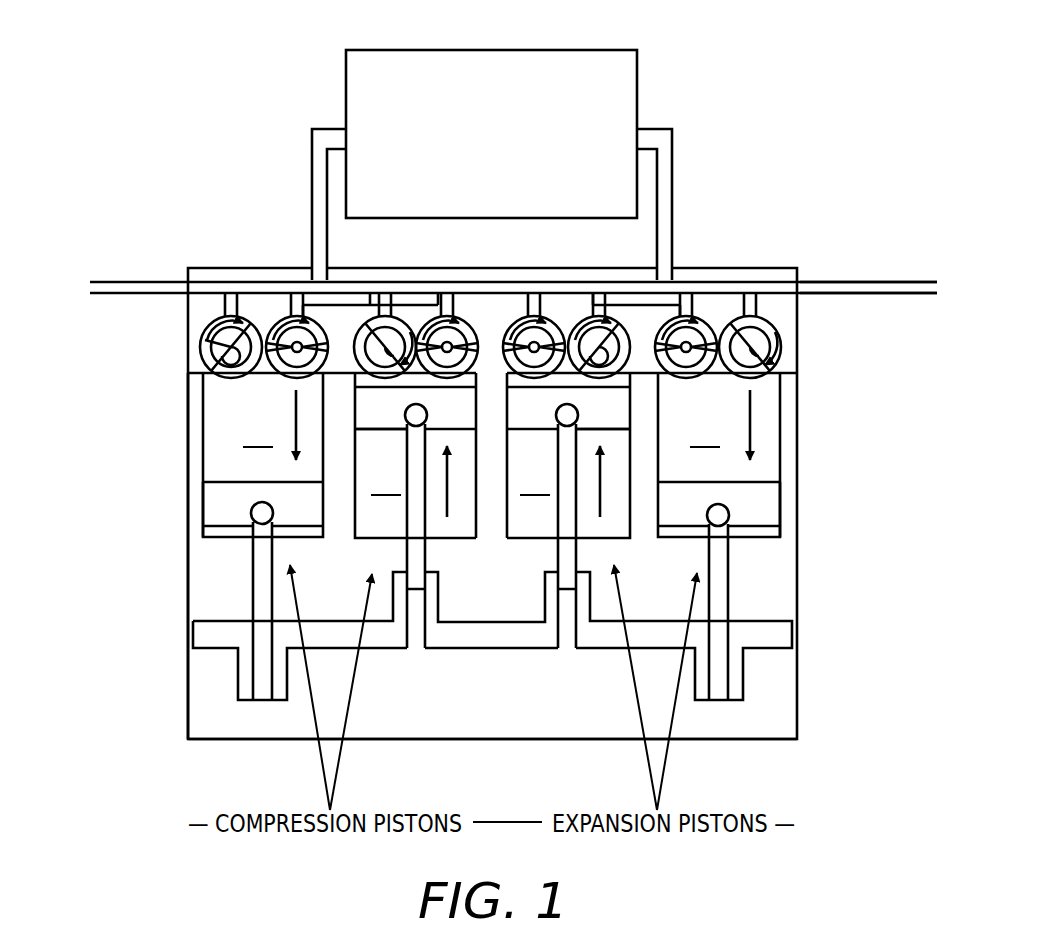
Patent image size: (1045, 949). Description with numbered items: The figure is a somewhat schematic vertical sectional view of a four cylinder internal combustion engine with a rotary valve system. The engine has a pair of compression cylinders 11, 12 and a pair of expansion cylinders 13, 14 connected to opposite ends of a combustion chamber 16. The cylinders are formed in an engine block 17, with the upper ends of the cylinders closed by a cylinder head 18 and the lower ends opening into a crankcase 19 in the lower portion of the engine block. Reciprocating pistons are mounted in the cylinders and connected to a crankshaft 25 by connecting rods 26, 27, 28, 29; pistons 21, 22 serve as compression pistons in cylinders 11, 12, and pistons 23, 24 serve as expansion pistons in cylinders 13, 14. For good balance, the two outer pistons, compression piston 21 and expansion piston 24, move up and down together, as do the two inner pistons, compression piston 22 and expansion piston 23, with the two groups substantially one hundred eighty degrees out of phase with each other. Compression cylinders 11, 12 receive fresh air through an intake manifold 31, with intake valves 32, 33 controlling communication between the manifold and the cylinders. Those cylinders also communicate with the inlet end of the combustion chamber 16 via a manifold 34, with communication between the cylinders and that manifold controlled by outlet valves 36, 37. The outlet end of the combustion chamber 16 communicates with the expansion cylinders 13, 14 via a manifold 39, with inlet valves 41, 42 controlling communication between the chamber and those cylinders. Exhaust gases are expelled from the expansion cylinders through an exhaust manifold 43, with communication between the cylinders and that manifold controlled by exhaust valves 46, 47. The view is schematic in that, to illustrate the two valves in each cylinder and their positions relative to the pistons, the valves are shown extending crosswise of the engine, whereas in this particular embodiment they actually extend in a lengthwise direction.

The compression cylinder 11 is at (263, 455).
The compression cylinder 12 is at (415, 455).
The expansion cylinder 13 is at (568, 455).
The expansion cylinder 14 is at (719, 455).
The combustion chamber 16 is at (362, 69).
The engine block 17 is at (190, 483).
The cylinder head 18 is at (538, 278).
The crankcase 19 is at (486, 722).
The compression piston 21 is at (210, 513).
The compression piston 22 is at (372, 411).
The expansion piston 23 is at (613, 412).
The expansion piston 24 is at (773, 513).
The crankshaft 25 is at (490, 648).
The connecting rod 26 is at (260, 585).
The connecting rod 27 is at (420, 552).
The connecting rod 28 is at (563, 520).
The connecting rod 29 is at (730, 587).
The intake manifold 31 is at (178, 282).
The intake valve 32 is at (205, 345).
The intake valve 33 is at (372, 334).
The manifold 34 is at (418, 297).
The outlet valve 36 is at (296, 317).
The outlet valve 37 is at (458, 330).
The manifold 39 is at (586, 297).
The inlet valve 41 is at (535, 320).
The inlet valve 42 is at (688, 325).
The exhaust manifold 43 is at (766, 290).
The exhaust valve 46 is at (611, 332).
The exhaust valve 47 is at (777, 327).